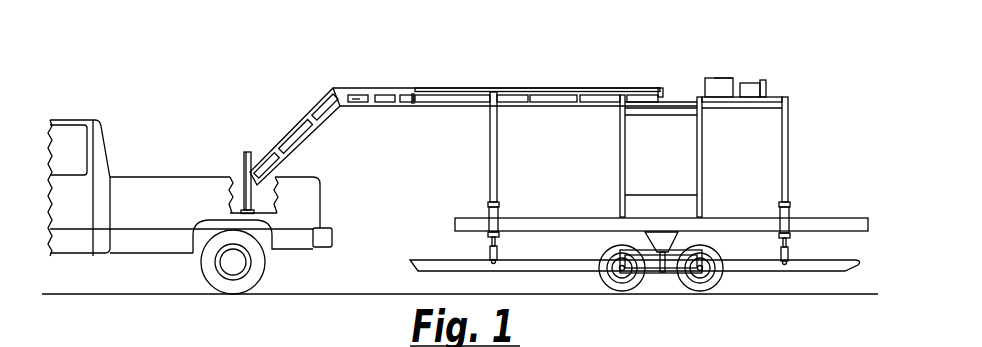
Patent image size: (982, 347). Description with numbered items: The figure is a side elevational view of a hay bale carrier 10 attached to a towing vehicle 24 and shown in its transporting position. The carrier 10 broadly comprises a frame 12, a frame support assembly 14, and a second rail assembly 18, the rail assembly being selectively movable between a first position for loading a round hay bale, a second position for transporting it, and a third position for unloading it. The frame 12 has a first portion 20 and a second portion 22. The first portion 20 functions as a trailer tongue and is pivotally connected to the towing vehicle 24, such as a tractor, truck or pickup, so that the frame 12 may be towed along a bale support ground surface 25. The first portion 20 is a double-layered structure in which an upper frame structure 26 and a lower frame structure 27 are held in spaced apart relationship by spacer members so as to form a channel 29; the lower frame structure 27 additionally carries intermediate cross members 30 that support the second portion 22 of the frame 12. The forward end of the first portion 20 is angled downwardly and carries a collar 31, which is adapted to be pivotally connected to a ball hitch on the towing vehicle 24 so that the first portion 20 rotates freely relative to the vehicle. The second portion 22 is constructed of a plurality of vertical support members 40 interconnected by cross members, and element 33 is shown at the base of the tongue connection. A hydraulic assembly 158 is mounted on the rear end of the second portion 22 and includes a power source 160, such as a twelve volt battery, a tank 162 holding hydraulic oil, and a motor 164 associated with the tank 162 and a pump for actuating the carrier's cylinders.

The hay bale carrier 10 is at (303, 83).
The frame 12 is at (391, 88).
The frame support assembly 14 is at (621, 295).
The second rail assembly 18 is at (483, 272).
The first portion 20 is at (545, 88).
The second portion 22 is at (541, 107).
The towing vehicle 24 is at (298, 252).
The bale support ground surface 25 is at (337, 293).
The upper frame structure 26 is at (431, 88).
The lower frame structure 27 is at (456, 106).
The channel 29 is at (468, 91).
The intermediate cross members 30 is at (385, 106).
The collar 31 is at (243, 163).
The pin 33 is at (357, 103).
The vertical support members 40 is at (789, 165).
The hydraulic assembly 158 is at (714, 78).
The power source 160 is at (720, 78).
The tank 162 is at (773, 89).
The motor 164 is at (748, 83).